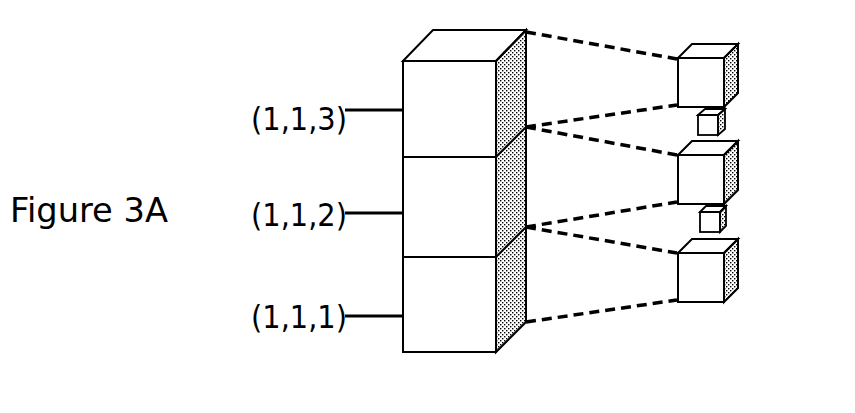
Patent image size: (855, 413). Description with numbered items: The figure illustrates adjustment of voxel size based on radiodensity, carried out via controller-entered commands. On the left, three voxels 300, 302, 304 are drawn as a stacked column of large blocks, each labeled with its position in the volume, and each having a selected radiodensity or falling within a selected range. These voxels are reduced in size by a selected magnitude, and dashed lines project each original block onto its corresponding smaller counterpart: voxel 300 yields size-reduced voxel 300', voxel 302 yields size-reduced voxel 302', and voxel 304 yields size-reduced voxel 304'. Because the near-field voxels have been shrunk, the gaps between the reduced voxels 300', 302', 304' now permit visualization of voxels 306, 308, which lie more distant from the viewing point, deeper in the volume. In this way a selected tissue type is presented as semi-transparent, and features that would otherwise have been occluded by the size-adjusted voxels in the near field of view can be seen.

The voxel 300 is at (449, 109).
The voxel 302 is at (449, 207).
The voxel 304 is at (449, 304).
The size-reduced voxel 300' is at (742, 75).
The size-reduced voxel 302' is at (744, 172).
The size-reduced voxel 304' is at (746, 271).
The voxel 306 is at (724, 117).
The voxel 308 is at (727, 218).